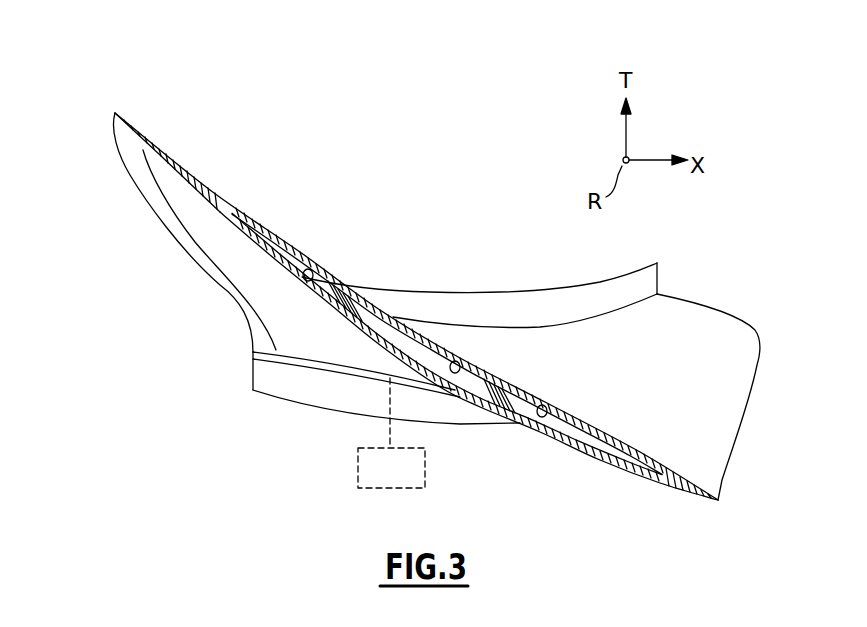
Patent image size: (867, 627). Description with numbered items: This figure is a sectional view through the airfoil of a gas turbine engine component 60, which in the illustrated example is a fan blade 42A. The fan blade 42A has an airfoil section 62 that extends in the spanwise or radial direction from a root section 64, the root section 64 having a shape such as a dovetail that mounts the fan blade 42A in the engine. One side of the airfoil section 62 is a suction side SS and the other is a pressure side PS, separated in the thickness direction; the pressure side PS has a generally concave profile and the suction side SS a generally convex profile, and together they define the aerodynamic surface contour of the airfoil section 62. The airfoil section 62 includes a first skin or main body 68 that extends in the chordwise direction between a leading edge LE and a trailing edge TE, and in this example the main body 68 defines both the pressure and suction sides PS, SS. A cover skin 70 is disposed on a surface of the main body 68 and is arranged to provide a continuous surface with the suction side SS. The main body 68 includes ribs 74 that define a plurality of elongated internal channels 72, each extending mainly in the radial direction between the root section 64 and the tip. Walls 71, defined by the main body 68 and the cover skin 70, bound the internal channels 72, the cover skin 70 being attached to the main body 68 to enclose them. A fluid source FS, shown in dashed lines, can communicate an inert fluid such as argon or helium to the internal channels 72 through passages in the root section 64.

The component 60 is at (153, 92).
The fan blade 42A is at (100, 133).
The airfoil section 62 is at (132, 203).
The root section 64 is at (238, 382).
The main body 68 is at (214, 204).
The cover skin 70 is at (192, 212).
The walls 71 is at (298, 258).
The internal channels 72 is at (313, 276).
The ribs 74 is at (338, 310).
The pressure side PS is at (278, 247).
The suction side SS is at (234, 291).
The leading edge LE is at (202, 270).
The trailing edge TE is at (753, 382).
The fluid source FS is at (404, 484).